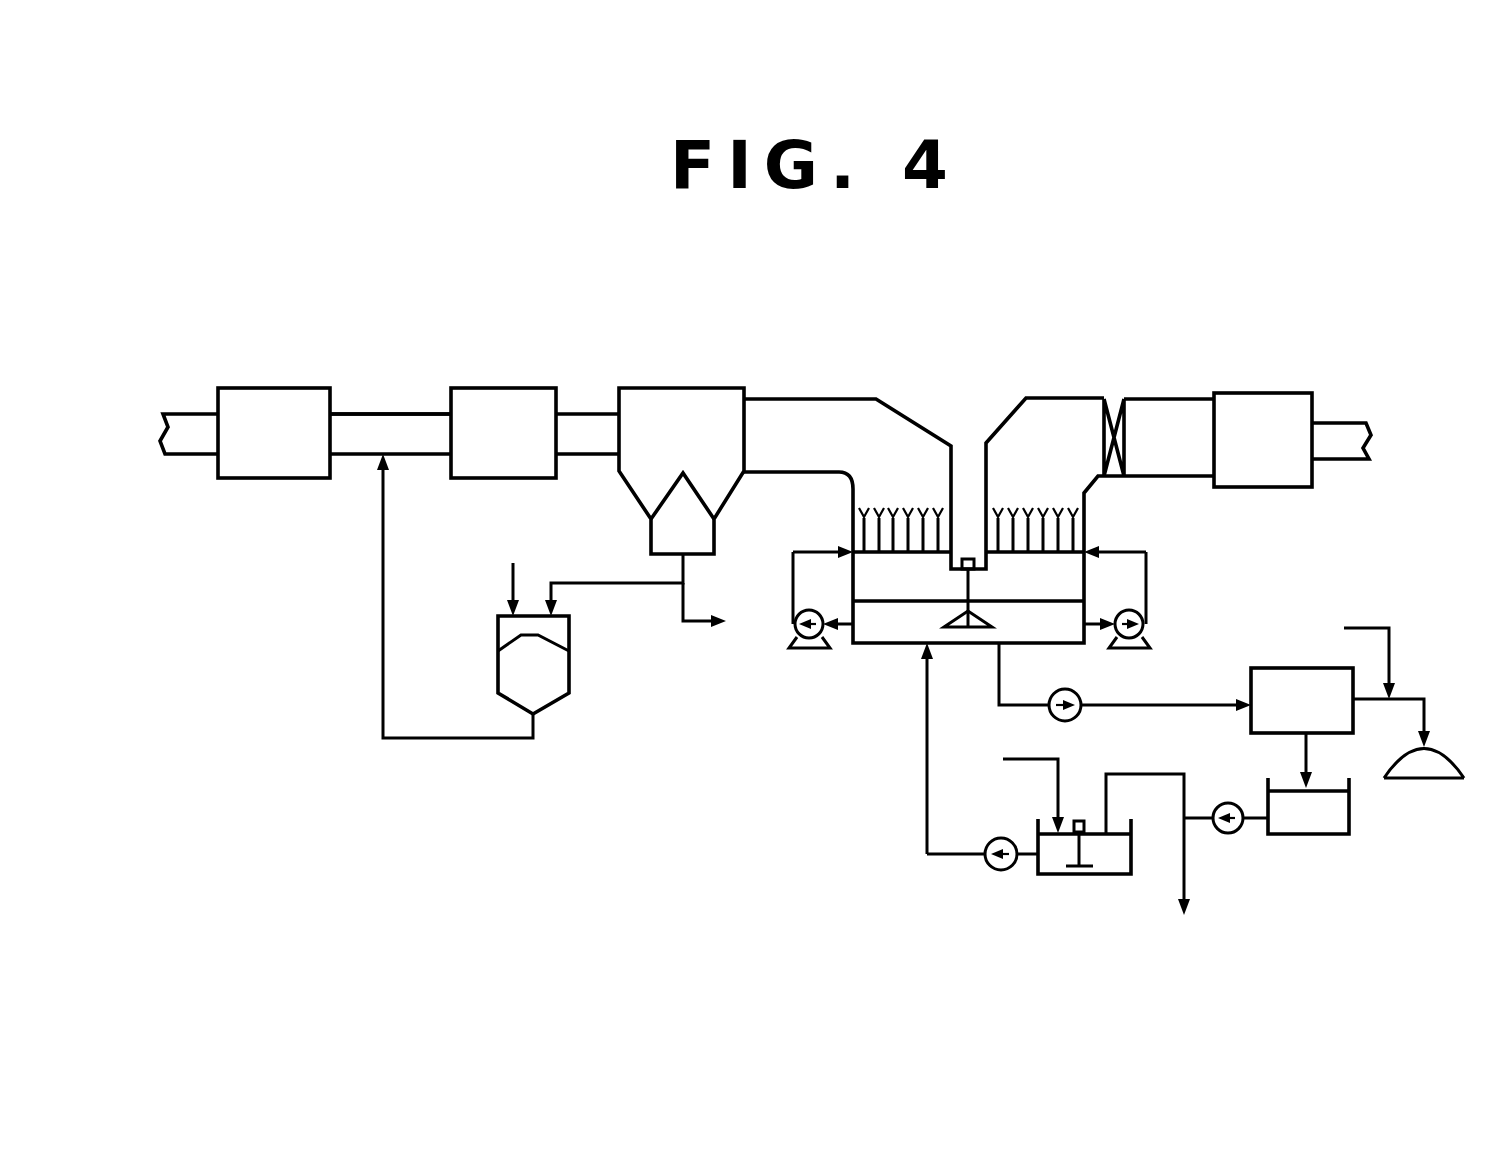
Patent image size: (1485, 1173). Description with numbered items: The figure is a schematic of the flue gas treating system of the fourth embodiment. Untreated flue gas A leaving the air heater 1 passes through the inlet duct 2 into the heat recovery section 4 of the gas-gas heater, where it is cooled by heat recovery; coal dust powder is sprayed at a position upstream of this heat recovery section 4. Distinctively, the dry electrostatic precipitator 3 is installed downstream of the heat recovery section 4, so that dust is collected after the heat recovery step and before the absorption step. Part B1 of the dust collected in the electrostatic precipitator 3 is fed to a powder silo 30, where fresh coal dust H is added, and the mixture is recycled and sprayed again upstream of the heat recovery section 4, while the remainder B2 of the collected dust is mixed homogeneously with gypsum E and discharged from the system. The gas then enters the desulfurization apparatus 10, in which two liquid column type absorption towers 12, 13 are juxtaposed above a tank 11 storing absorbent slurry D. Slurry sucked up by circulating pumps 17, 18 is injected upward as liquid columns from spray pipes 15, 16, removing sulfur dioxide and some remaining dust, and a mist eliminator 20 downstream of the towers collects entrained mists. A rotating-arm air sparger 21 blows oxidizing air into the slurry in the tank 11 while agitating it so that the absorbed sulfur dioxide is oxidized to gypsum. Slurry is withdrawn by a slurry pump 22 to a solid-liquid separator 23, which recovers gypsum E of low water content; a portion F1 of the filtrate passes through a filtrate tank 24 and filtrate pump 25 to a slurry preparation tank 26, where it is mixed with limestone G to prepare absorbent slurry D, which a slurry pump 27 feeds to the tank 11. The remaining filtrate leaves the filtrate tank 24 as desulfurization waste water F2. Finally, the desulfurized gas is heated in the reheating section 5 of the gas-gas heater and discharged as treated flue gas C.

The air heater 1 is at (268, 387).
The inlet duct 2 is at (417, 413).
The dry electrostatic precipitator 3 is at (680, 387).
The heat recovery section 4 is at (500, 387).
The reheating section 5 is at (1262, 392).
The desulfurization apparatus 10 is at (900, 368).
The tank 11 is at (883, 643).
The absorption tower 12 is at (852, 508).
The absorption tower 13 is at (1083, 505).
The spray pipes 15 is at (882, 553).
The spray pipes 16 is at (1037, 552).
The circulating pump 17 is at (797, 641).
The circulating pump 18 is at (1145, 623).
The mist eliminator 20 is at (1127, 425).
The rotating-arm air sparger 21 is at (967, 629).
The slurry pump 22 is at (1078, 694).
The solid-liquid separator 23 is at (1289, 667).
The filtrate tank 24 is at (1340, 834).
The filtrate pump 25 is at (1233, 832).
The slurry preparation tank 26 is at (1103, 874).
The slurry pump 27 is at (1000, 870).
The powder silo 30 is at (497, 661).
The untreated flue gas A is at (355, 432).
The part of collected dust B1 is at (608, 583).
The remainder of collected dust B2 is at (1370, 627).
The treated flue gas C is at (1352, 432).
The absorbent slurry D is at (926, 782).
The gypsum E is at (1425, 761).
The portion of filtrate F1 is at (1152, 773).
The desulfurization waste water F2 is at (1190, 880).
The limestone G is at (1016, 787).
The fresh coal dust H is at (508, 583).